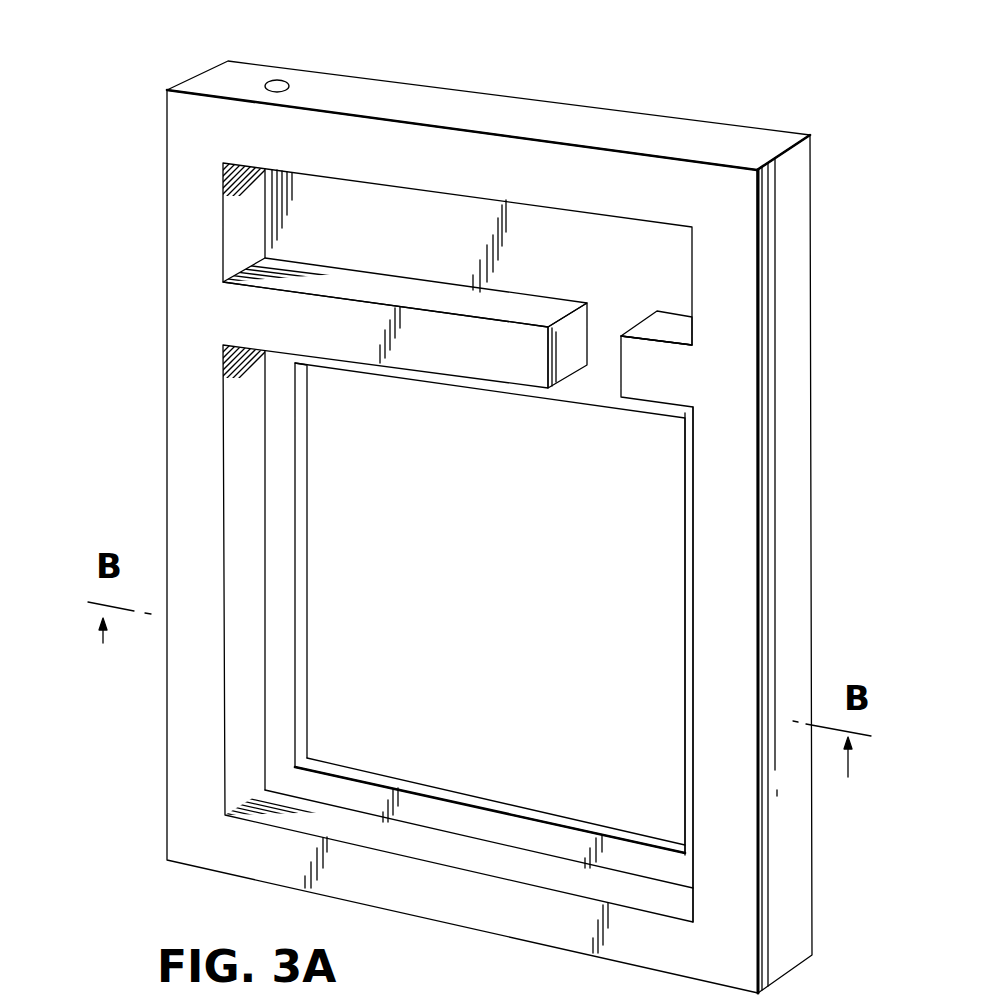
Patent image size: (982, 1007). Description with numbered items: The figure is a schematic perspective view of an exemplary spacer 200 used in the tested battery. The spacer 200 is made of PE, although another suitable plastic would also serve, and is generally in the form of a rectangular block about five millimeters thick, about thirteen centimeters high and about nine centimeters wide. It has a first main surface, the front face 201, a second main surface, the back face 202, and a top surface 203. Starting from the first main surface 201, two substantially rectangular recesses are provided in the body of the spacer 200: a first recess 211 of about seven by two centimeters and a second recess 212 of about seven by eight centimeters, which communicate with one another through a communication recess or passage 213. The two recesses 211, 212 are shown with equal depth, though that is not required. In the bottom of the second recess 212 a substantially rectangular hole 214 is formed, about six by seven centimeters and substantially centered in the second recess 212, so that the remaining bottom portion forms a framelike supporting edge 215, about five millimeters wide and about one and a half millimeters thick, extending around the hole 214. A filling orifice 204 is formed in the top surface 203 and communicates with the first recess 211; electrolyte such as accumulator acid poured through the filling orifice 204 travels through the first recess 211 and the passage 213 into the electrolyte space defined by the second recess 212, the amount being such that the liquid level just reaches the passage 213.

The spacer 200 is at (755, 78).
The first main surface 201 is at (189, 201).
The second main surface 202 is at (810, 212).
The top surface 203 is at (410, 95).
The filling orifice 204 is at (277, 80).
The first recess 211 is at (453, 224).
The second recess 212 is at (660, 518).
The communication recess or passage 213 is at (609, 315).
The rectangular hole 214 is at (643, 624).
The framelike supporting edge 215 is at (285, 660).